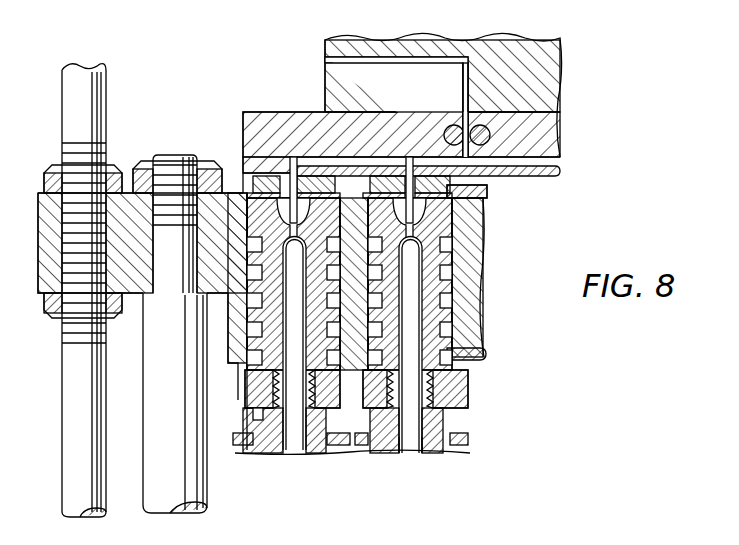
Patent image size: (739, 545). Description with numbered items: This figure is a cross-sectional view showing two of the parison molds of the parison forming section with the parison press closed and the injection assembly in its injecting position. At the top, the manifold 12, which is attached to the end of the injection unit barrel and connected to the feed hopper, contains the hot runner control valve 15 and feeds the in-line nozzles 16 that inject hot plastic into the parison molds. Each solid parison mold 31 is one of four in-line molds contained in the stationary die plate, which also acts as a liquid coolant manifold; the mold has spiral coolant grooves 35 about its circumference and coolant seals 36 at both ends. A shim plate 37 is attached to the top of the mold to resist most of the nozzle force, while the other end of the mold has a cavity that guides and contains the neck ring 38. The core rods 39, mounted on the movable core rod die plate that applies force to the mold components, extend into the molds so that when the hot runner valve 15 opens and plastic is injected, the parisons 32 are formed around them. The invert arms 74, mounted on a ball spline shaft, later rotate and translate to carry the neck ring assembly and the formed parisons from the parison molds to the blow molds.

The manifold 12 is at (555, 147).
The hot runner control valve 15 is at (490, 137).
The nozzles 16 is at (428, 228).
The parison molds 31 is at (475, 325).
The parisons 32 is at (430, 383).
The spiral coolant grooves 35 is at (448, 278).
The coolant seals 36 is at (450, 212).
The shim plate 37 is at (450, 188).
The neck ring 38 is at (450, 408).
The core rods 39 is at (405, 437).
The invert arms 74 is at (232, 437).